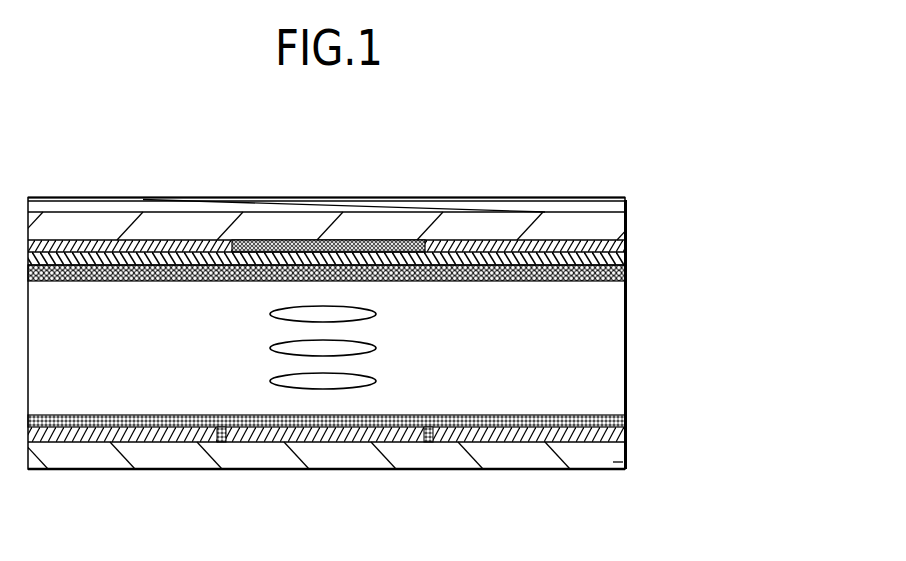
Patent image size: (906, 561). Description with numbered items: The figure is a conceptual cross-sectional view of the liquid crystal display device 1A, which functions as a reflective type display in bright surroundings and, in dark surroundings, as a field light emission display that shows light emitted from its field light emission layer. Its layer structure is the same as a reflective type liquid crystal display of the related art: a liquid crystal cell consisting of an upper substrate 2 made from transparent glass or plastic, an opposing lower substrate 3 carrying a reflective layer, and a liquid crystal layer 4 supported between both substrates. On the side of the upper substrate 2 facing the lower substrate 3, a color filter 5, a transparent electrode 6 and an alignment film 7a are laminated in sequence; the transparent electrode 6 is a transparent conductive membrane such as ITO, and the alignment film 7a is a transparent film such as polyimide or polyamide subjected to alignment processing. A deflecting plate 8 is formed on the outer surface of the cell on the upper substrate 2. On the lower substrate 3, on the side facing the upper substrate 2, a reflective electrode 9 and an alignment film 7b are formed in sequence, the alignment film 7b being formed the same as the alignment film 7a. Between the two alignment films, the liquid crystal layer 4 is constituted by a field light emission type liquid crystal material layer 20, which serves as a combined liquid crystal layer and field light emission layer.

The liquid crystal display device 1A is at (862, 442).
The upper substrate 2 is at (627, 229).
The lower substrate 3 is at (627, 470).
The liquid crystal layer 4 is at (385, 348).
The field light emission type liquid crystal material layer 20 is at (323, 347).
The color filter 5 is at (627, 243).
The transparent electrode 6 is at (627, 262).
The alignment film 7a is at (627, 277).
The alignment film 7b is at (627, 417).
The deflecting plate 8 is at (627, 203).
The reflective electrode 9 is at (627, 437).